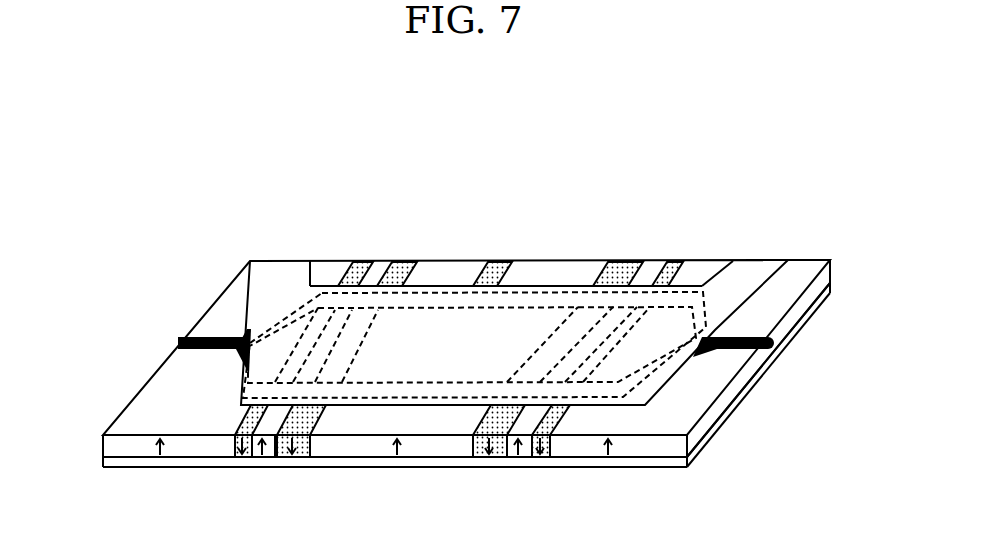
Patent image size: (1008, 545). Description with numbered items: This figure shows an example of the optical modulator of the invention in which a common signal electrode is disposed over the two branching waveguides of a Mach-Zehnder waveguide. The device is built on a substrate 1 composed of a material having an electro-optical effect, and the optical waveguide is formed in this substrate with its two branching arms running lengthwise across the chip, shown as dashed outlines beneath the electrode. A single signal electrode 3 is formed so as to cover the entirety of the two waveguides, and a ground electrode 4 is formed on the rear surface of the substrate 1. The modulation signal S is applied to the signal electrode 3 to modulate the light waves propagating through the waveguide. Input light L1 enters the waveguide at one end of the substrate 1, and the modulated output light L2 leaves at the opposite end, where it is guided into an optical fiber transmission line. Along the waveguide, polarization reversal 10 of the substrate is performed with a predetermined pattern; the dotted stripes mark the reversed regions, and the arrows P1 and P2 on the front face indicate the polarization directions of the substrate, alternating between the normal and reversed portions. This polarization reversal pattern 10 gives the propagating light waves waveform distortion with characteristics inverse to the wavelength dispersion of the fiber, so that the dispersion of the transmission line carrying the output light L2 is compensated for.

The substrate 1 is at (103, 445).
The signal electrode 3 is at (250, 293).
The ground electrode 4 is at (810, 320).
The polarization reversal pattern 10 is at (393, 280).
The polarization direction P1 is at (398, 445).
The polarization direction P2 is at (293, 440).
The modulation signal S is at (286, 250).
The input light L1 is at (170, 340).
The output light L2 is at (777, 343).